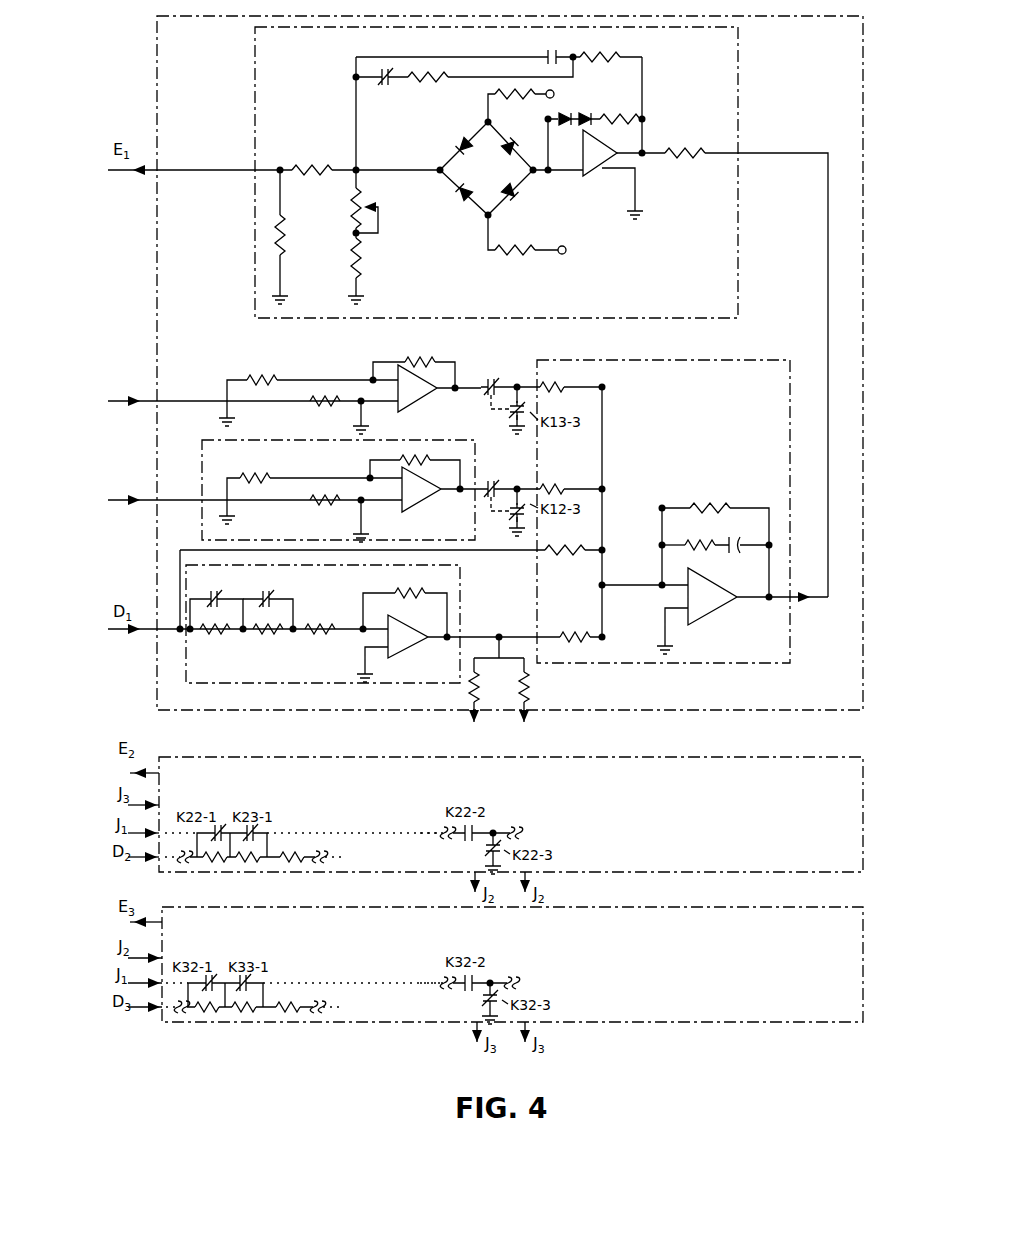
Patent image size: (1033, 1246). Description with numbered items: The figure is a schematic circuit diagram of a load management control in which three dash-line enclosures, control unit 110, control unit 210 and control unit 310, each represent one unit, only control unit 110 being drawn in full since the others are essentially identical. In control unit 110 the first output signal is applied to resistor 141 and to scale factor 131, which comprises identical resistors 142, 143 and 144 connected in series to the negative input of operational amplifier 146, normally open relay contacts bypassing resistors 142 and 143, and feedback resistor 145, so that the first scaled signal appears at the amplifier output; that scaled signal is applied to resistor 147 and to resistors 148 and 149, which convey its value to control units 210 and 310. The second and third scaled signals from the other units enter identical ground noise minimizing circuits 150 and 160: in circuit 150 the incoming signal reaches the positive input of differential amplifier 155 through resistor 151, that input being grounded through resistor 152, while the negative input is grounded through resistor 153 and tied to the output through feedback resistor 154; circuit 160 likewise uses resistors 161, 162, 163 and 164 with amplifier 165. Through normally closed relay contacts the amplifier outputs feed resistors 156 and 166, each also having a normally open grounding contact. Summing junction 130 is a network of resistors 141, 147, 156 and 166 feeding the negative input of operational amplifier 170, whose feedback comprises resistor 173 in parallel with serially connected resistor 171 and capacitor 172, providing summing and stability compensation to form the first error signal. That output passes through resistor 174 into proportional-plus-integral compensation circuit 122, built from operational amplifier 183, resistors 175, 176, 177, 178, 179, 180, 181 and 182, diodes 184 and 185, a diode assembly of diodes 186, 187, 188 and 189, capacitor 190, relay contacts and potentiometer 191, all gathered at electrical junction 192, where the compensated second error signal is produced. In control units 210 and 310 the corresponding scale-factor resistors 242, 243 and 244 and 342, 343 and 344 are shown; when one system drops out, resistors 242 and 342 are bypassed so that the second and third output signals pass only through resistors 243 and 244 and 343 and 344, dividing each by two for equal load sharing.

The control unit 110 is at (775, 697).
The proportional-plus-integral compensation circuit 122 is at (688, 295).
The summing junction 130 is at (680, 460).
The scale factor 131 is at (313, 676).
The ground noise minimizing circuit 150 is at (288, 497).
The ground noise minimizing circuit 160 is at (292, 425).
The resistor 141 is at (565, 557).
The resistor 142 is at (220, 637).
The resistor 143 is at (274, 637).
The resistor 144 is at (328, 637).
The resistor 145 is at (414, 591).
The operational amplifier 146 is at (418, 652).
The resistor 147 is at (572, 647).
The resistor 148 is at (469, 688).
The resistor 149 is at (530, 684).
The resistor 151 is at (336, 507).
The resistor 152 is at (365, 520).
The resistor 153 is at (272, 472).
The feedback resistor 154 is at (398, 456).
The differential amplifier 155 is at (433, 508).
The resistor 156 is at (542, 483).
The resistor 161 is at (340, 407).
The resistor 162 is at (368, 418).
The resistor 163 is at (272, 372).
The feedback resistor 164 is at (412, 356).
The amplifier 165 is at (428, 404).
The resistor 166 is at (552, 384).
The operational amplifier 170 is at (720, 614).
The resistor 171 is at (701, 542).
The capacitor 172 is at (744, 535).
The resistor 173 is at (708, 504).
The resistor 174 is at (705, 158).
The resistor 175 is at (634, 112).
The resistor 176 is at (510, 255).
The resistor 177 is at (510, 96).
The resistor 178 is at (622, 55).
The resistor 179 is at (442, 82).
The resistor 180 is at (363, 263).
The resistor 181 is at (320, 166).
The resistor 182 is at (288, 230).
The operational amplifier 183 is at (596, 175).
The diode 184 is at (561, 141).
The voltage-limiting diode 185 is at (586, 123).
The diode 186 is at (512, 194).
The diode 187 is at (511, 150).
The diode 188 is at (465, 151).
The diode 189 is at (472, 185).
The capacitor 190 is at (547, 49).
The potentiometer 191 is at (380, 224).
The electrical junction 192 is at (358, 169).
The control unit 210 is at (790, 863).
The resistor 242 is at (214, 863).
The resistor 243 is at (247, 863).
The resistor 244 is at (292, 863).
The control unit 310 is at (785, 1013).
The resistor 342 is at (206, 1013).
The resistor 343 is at (243, 1013).
The resistor 344 is at (288, 1013).